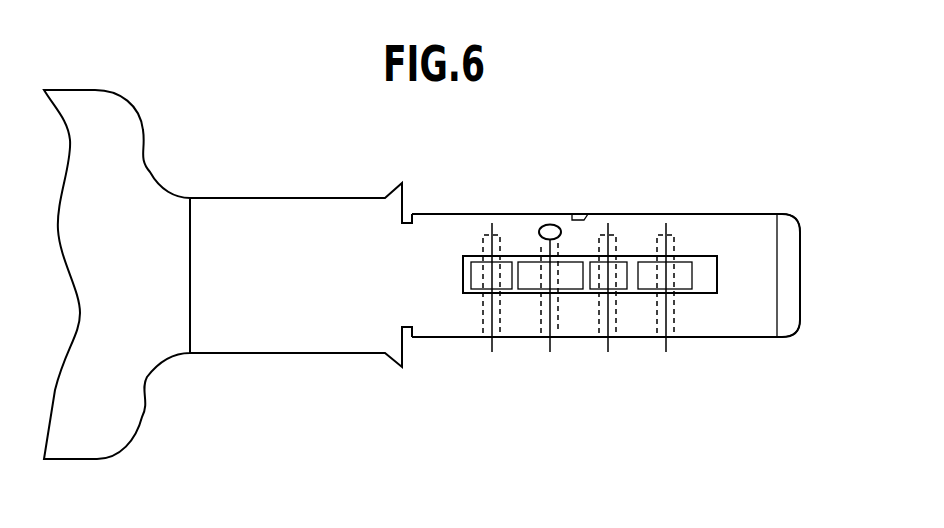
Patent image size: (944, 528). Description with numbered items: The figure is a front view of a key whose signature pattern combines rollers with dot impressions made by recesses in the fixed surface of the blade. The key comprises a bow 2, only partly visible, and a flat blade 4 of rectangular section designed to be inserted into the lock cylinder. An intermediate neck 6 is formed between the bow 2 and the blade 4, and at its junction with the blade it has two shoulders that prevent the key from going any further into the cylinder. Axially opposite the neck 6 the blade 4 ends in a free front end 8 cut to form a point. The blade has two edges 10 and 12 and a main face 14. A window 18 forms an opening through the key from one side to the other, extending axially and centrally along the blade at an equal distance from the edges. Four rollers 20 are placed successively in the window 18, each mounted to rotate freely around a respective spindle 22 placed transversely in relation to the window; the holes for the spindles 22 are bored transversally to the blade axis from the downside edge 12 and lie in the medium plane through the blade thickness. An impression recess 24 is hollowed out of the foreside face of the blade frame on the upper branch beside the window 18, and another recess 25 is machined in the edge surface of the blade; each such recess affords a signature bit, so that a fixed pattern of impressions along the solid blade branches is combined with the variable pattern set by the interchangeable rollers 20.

The bow 2 is at (85, 113).
The blade 4 is at (742, 235).
The intermediate neck 6 is at (230, 198).
The free front end 8 is at (792, 258).
The edge 10 is at (698, 214).
The edge 12 is at (580, 338).
The main face 14 is at (747, 300).
The window 18 is at (633, 265).
The roller 20 is at (528, 280).
The spindle 22 is at (666, 337).
The impression recess 24 is at (548, 226).
The recess 25 is at (578, 214).